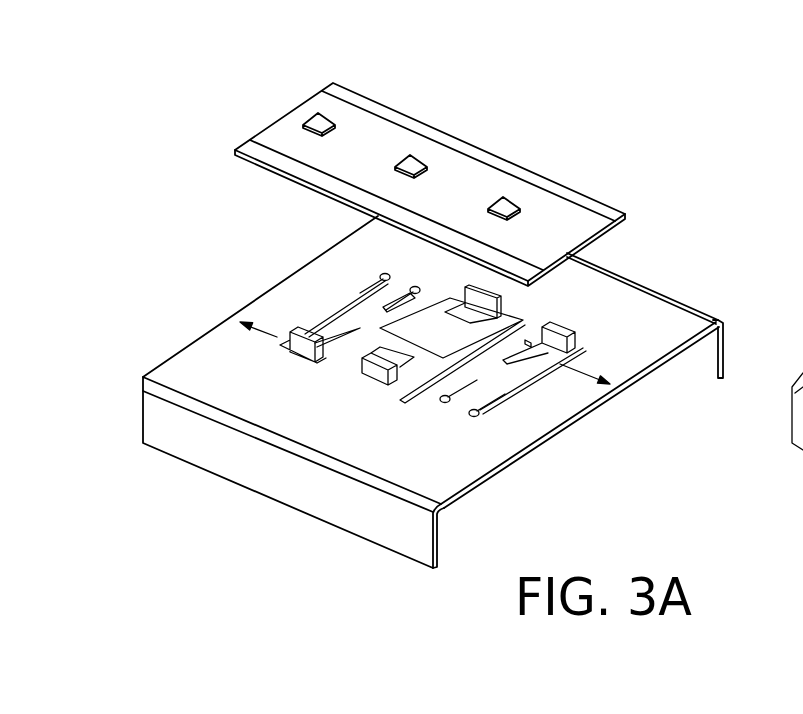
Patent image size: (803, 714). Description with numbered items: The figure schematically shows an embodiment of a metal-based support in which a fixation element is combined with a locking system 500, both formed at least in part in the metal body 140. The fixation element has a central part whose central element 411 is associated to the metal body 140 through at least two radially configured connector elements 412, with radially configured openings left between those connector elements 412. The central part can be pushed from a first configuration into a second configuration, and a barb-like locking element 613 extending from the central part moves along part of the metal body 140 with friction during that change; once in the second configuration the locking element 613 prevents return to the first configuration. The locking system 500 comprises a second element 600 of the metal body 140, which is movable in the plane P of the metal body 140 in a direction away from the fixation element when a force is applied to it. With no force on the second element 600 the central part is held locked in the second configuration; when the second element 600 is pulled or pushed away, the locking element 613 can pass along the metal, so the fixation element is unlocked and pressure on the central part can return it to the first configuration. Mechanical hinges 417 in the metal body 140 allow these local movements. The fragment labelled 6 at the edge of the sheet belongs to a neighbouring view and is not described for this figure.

The metal body 140 is at (657, 320).
The central element 411 is at (470, 340).
The connector elements 412 is at (508, 307).
The mechanical hinges 417 is at (417, 287).
The locking system 500 is at (317, 298).
The second element 600 is at (313, 330).
The locking element 613 is at (380, 281).
The plane P is at (233, 402).
The adjacent figure label 6 is at (792, 532).